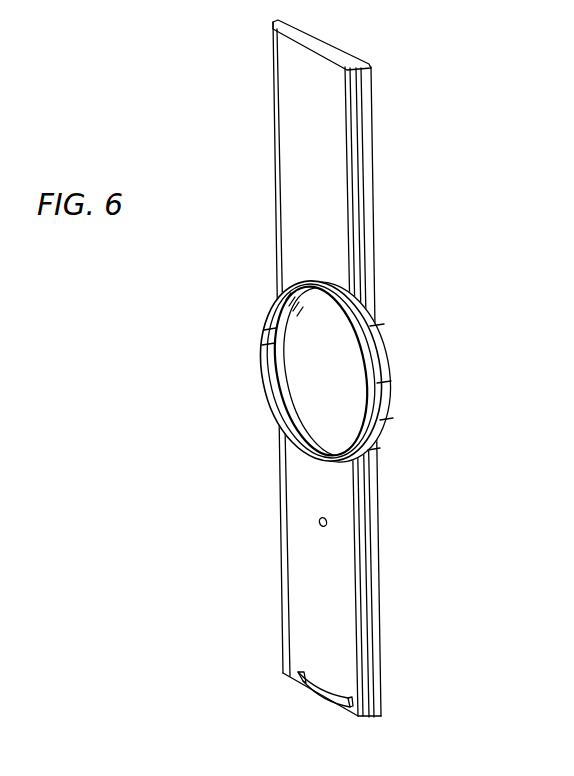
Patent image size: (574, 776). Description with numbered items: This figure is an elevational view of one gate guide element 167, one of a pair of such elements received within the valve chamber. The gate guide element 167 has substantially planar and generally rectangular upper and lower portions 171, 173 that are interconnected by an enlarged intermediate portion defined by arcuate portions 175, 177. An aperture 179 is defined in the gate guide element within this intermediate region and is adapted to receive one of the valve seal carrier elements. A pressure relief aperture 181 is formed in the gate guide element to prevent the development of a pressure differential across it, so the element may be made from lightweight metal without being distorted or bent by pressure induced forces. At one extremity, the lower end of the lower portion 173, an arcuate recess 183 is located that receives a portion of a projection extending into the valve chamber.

The gate guide element 167 is at (228, 116).
The upper portion 171 is at (334, 154).
The lower portion 173 is at (342, 593).
The arcuate portion 175 is at (266, 346).
The arcuate portion 177 is at (384, 396).
The aperture 179 is at (333, 308).
The pressure relief aperture 181 is at (328, 520).
The arcuate recess 183 is at (305, 684).